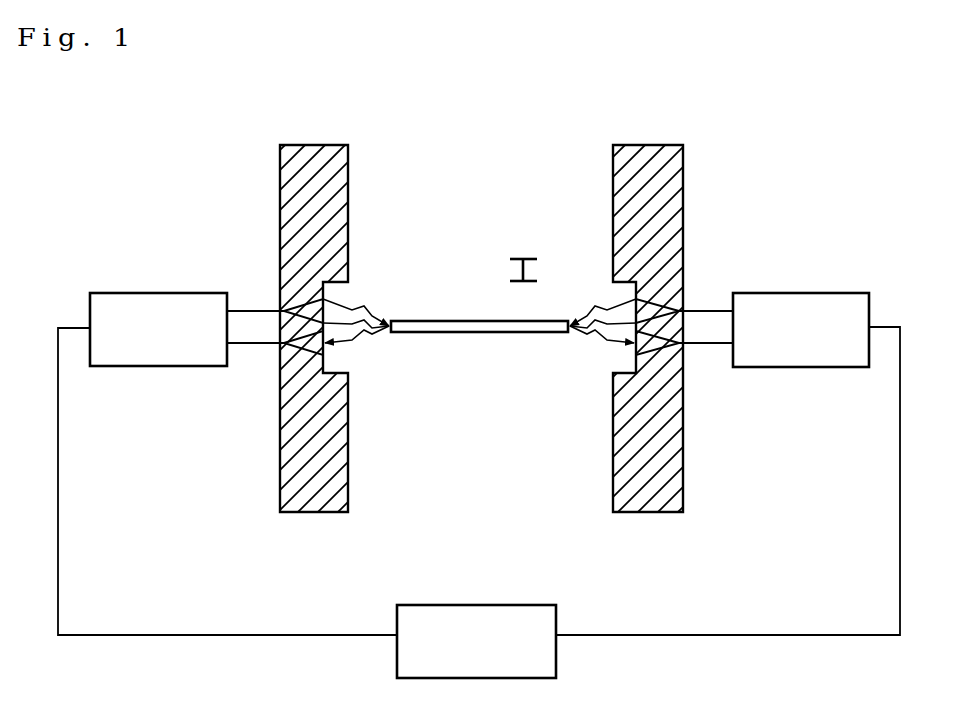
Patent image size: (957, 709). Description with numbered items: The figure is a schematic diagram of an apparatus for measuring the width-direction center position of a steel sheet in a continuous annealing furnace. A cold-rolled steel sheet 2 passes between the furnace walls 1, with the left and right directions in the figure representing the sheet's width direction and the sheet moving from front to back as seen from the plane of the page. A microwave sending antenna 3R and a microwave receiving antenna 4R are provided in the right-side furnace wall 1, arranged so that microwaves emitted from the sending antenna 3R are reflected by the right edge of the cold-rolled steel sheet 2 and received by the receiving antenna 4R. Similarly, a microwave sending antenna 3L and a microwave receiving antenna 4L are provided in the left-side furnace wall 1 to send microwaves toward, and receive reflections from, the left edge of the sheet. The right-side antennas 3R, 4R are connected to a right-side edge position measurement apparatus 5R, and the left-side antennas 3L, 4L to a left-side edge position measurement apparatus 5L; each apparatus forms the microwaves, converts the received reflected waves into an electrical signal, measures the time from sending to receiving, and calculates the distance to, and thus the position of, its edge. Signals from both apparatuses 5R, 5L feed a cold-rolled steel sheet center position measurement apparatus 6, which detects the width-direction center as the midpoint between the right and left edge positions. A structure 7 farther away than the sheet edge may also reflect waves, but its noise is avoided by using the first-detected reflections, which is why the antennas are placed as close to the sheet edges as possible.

The furnace wall 1 is at (348, 184).
The cold-rolled steel sheet 2 is at (415, 321).
The microwave sending antenna 3L is at (325, 303).
The microwave sending antenna 3R is at (634, 303).
The microwave receiving antenna 4L is at (327, 350).
The microwave receiving antenna 4R is at (634, 350).
The left-side edge position measurement apparatus 5L is at (160, 293).
The right-side edge position measurement apparatus 5R is at (800, 293).
The cold-rolled steel sheet center position measurement apparatus 6 is at (475, 605).
The structure 7 is at (527, 258).